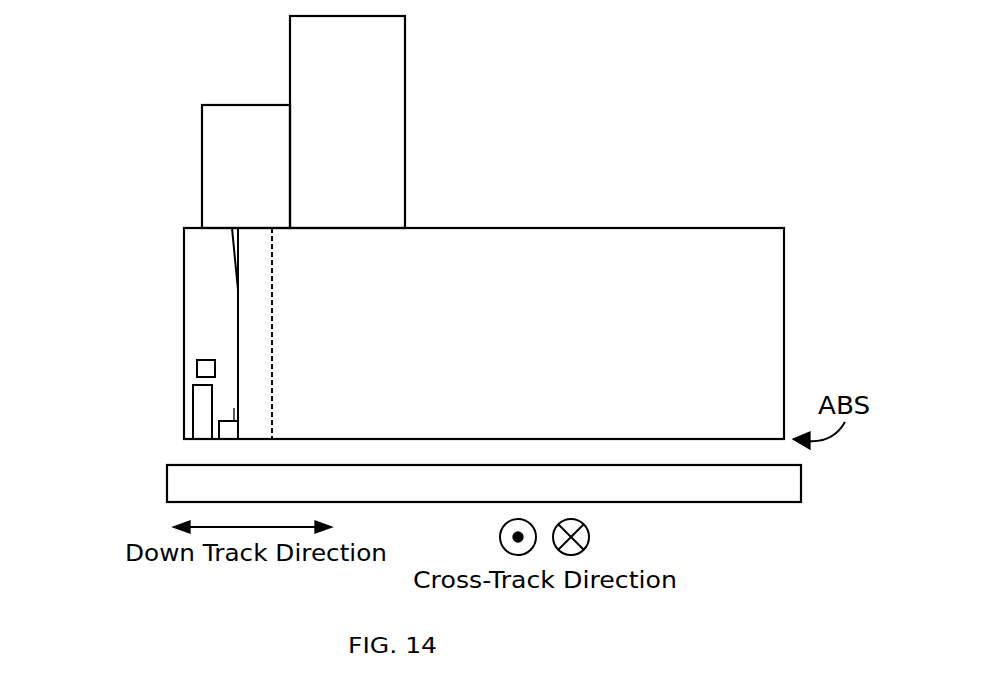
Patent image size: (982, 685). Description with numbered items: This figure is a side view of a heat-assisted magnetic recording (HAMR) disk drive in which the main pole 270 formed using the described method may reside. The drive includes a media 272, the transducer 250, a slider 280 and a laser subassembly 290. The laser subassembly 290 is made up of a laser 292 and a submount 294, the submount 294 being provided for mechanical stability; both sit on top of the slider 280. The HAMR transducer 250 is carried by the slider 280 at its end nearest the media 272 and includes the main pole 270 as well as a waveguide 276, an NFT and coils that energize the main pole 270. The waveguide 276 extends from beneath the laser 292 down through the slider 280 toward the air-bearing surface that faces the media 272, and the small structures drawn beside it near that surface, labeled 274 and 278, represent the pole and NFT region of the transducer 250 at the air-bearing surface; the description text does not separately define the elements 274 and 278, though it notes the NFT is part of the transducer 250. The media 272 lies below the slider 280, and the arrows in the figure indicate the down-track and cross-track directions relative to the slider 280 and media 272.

The laser subassembly 290 is at (377, 122).
The laser 292 is at (272, 103).
The submount 294 is at (405, 140).
The slider 280 is at (784, 297).
The transducer 250 is at (272, 282).
The waveguide 276 is at (237, 306).
The return pole 274 is at (197, 360).
The main pole 270 is at (193, 428).
The near-field transducer 278 is at (228, 440).
The media 272 is at (167, 488).